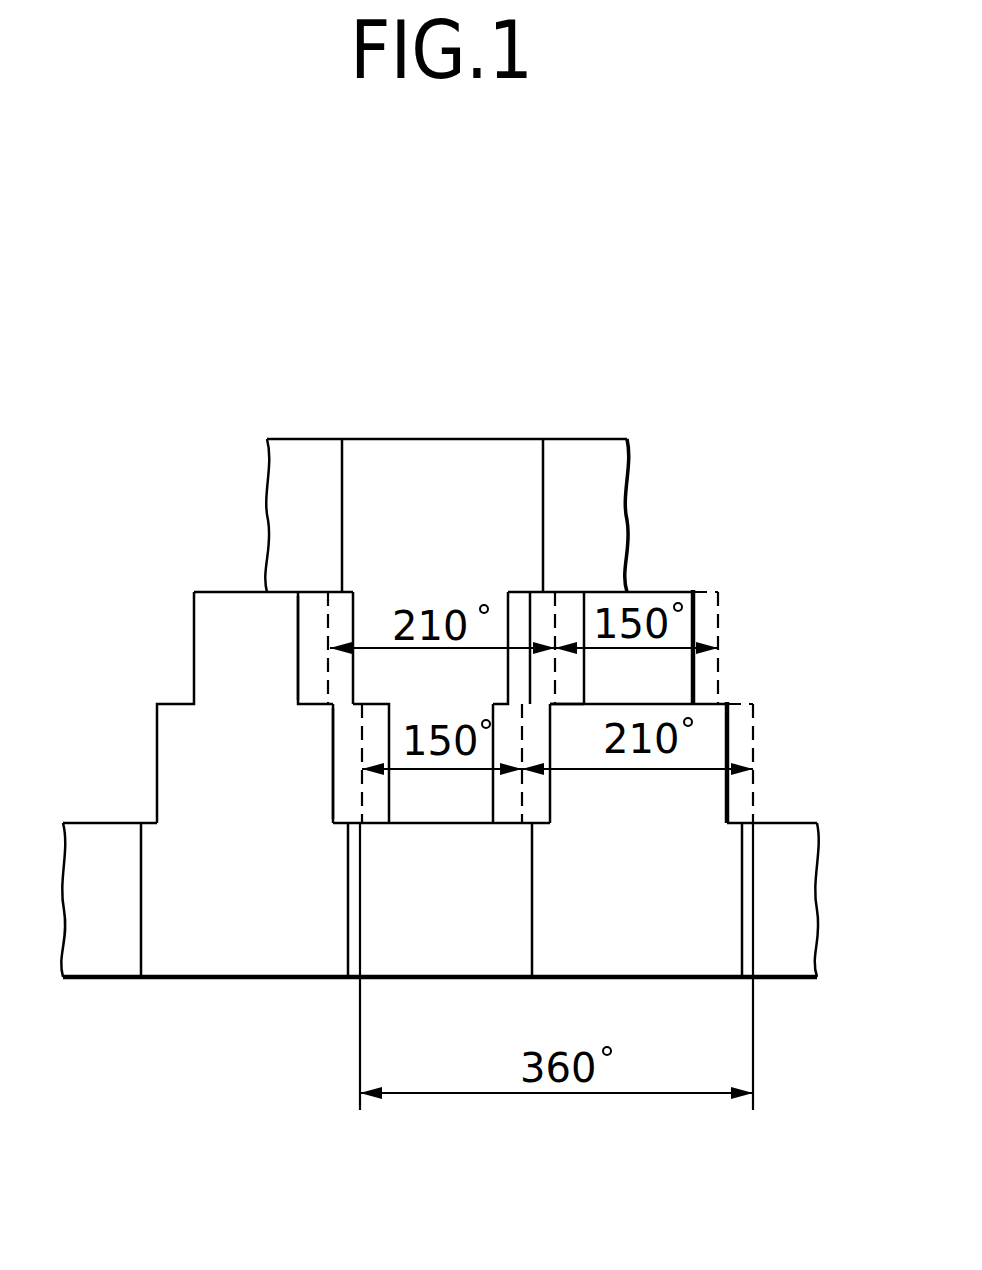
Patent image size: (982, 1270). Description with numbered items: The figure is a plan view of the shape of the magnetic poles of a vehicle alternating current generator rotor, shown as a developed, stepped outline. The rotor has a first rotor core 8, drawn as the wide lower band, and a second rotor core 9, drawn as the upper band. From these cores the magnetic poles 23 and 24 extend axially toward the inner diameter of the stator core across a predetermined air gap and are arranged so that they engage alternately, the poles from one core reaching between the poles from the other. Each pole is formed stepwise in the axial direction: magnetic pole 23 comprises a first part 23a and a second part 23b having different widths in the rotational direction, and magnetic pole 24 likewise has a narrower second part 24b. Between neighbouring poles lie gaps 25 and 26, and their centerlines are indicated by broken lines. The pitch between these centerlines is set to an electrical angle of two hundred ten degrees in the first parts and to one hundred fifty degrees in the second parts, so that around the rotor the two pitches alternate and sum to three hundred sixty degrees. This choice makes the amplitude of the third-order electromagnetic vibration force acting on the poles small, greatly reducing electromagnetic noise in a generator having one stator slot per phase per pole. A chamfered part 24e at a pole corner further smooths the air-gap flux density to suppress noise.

The first rotor core 8 is at (442, 938).
The second rotor core 9 is at (392, 457).
The magnetic pole 23 is at (662, 798).
The first part 23a is at (730, 730).
The second part 23b is at (690, 620).
The magnetic pole 24 is at (513, 617).
The second part 24b is at (385, 782).
The chamfered part 24e is at (363, 673).
The gap 25 is at (540, 738).
The gap 26 is at (338, 783).